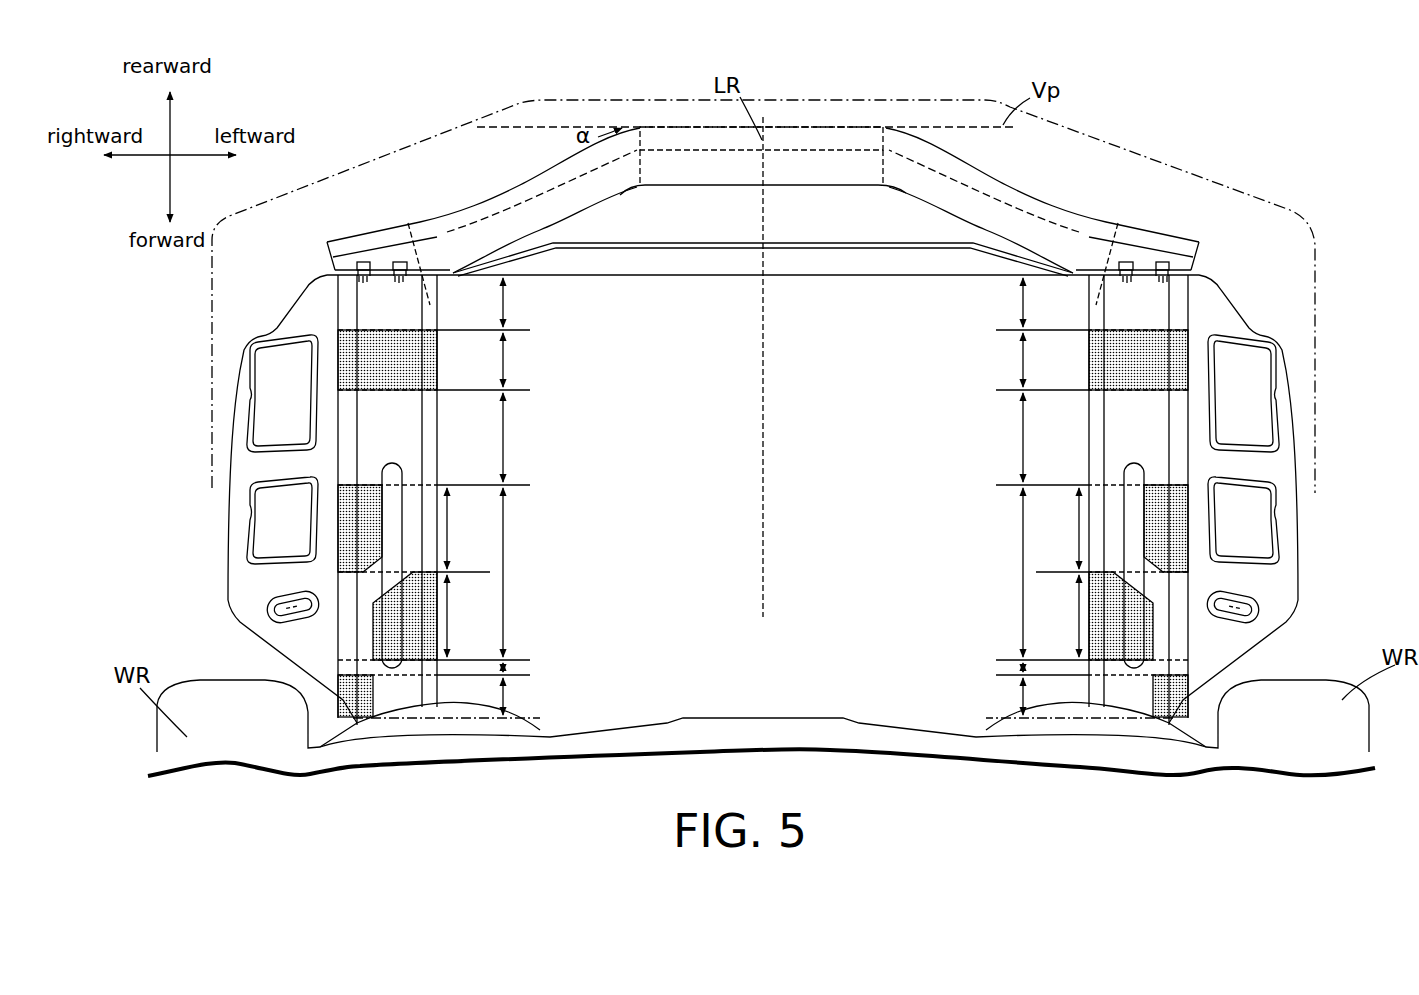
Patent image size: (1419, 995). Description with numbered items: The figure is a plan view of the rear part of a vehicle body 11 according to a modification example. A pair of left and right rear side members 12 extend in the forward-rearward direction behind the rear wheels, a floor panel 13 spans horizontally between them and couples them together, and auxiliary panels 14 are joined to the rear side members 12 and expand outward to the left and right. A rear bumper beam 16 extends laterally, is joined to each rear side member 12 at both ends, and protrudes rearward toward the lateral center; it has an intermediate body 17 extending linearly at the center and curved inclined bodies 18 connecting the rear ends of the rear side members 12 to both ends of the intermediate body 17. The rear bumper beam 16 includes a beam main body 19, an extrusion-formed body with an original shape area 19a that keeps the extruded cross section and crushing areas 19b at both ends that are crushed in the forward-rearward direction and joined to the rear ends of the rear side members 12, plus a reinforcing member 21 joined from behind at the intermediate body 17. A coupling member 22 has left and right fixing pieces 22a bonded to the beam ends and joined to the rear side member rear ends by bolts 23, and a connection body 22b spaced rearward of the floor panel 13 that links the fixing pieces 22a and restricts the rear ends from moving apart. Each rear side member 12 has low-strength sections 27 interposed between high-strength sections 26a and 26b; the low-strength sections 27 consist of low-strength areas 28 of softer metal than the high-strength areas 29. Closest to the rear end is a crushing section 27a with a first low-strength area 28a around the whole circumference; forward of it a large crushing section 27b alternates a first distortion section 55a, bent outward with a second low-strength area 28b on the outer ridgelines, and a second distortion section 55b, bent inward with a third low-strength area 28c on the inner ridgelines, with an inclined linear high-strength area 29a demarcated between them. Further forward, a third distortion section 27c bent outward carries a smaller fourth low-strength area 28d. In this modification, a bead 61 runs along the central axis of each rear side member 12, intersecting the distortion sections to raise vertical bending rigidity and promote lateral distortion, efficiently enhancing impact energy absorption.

The vehicle body 11 is at (1107, 183).
The rear side member 12 is at (330, 437).
The floor panel 13 is at (695, 287).
The auxiliary panel 14 is at (300, 318).
The rear bumper beam 16 is at (1022, 192).
The intermediate body 17 is at (819, 195).
The inclined body 18 is at (593, 205).
The beam main body 19 is at (697, 188).
The original shape area 19a is at (400, 298).
The crushing area 19b is at (764, 314).
The reinforcing member 21 is at (829, 127).
The coupling member 22 is at (789, 250).
The fixing piece 22a is at (377, 265).
The connection body 22b is at (578, 240).
The bolt 23 is at (362, 262).
The high-strength section 26a is at (763, 437).
The high-strength section 26b is at (761, 665).
The low-strength section 27 is at (763, 496).
The crushing section 27a is at (761, 360).
The large crushing section 27b is at (759, 576).
The third distortion section 27c is at (759, 697).
The low-strength area 28 is at (739, 525).
The first low-strength area 28a is at (360, 360).
The second low-strength area 28b is at (367, 500).
The third low-strength area 28c is at (390, 618).
The fourth low-strength area 28d is at (370, 693).
The high-strength area 29 is at (372, 305).
The linear high-strength area 29a is at (372, 560).
The first distortion section 55a is at (763, 528).
The second distortion section 55b is at (763, 616).
The bead 61 is at (398, 463).